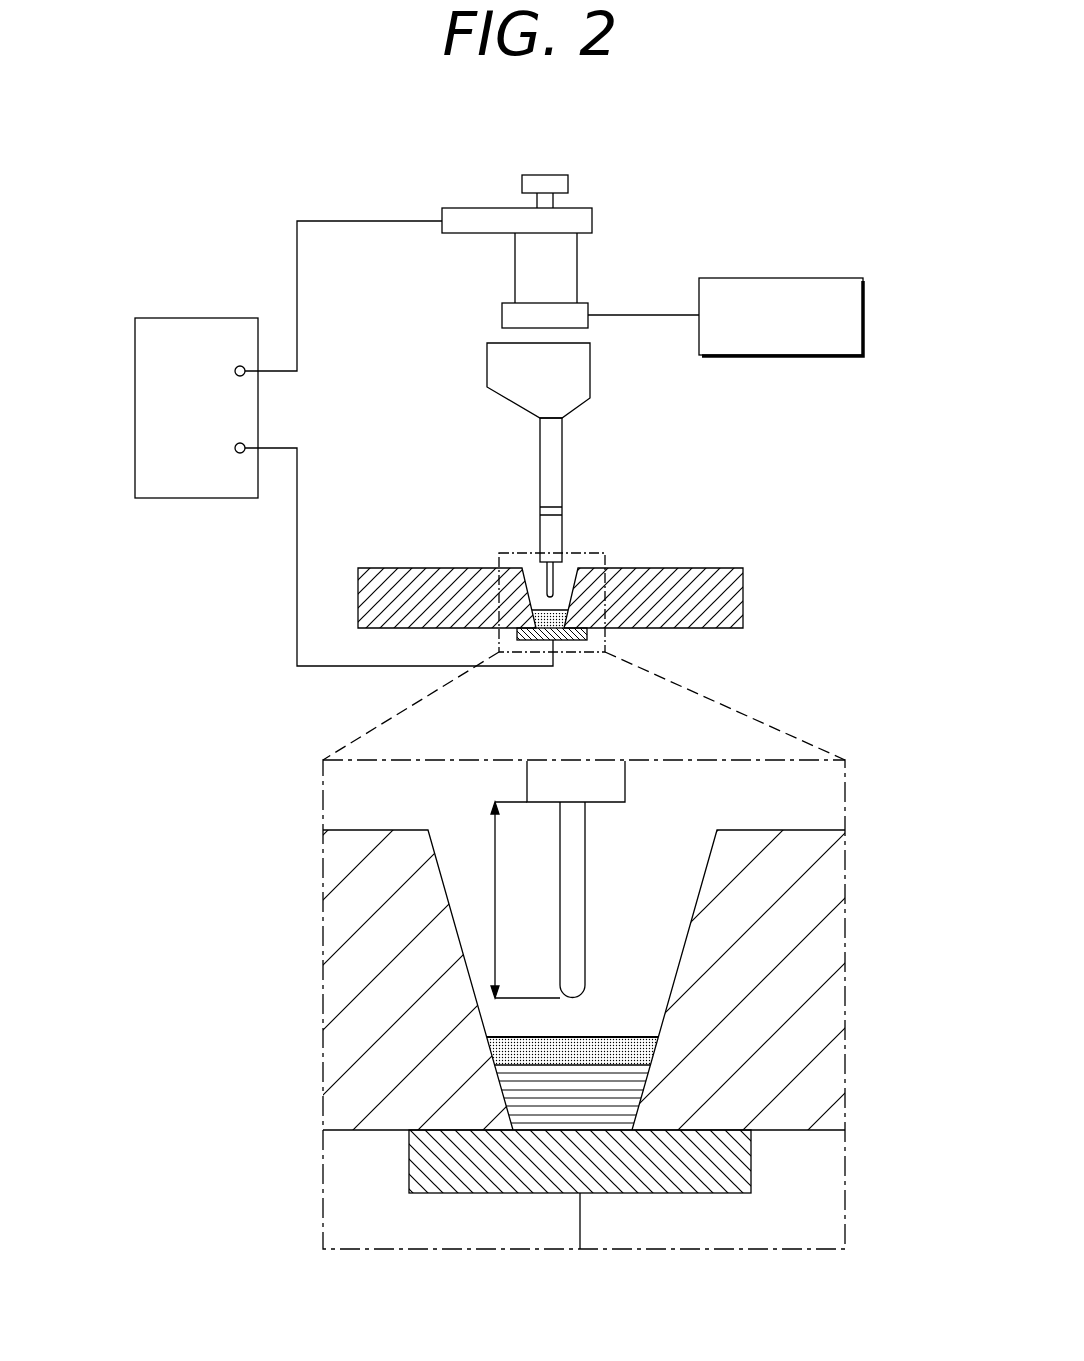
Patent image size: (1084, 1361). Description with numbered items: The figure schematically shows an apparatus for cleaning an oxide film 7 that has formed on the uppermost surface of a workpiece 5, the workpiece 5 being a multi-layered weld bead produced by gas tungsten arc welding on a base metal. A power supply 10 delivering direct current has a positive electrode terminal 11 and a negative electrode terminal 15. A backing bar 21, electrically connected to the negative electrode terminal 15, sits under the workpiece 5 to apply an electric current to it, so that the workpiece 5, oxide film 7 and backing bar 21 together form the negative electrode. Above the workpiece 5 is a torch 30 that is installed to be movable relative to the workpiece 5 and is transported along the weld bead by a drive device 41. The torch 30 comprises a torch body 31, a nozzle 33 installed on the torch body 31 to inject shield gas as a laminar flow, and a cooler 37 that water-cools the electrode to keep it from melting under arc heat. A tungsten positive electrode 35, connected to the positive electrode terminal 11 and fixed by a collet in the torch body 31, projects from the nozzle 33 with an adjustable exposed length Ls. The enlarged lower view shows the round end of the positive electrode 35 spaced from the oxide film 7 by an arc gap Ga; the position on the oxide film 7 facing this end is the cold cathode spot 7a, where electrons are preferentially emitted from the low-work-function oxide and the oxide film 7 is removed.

The workpiece 5 is at (547, 1107).
The oxide film 7 is at (568, 1053).
The cold cathode spot 7a is at (573, 1037).
The arc gap Ga is at (567, 1018).
The power supply 10 is at (198, 316).
The positive electrode terminal 11 is at (240, 366).
The negative electrode terminal 15 is at (241, 454).
The backing bar 21 is at (650, 1173).
The torch 30 is at (590, 158).
The torch body 31 is at (577, 269).
The nozzle 33 is at (562, 537).
The positive electrode 35 is at (555, 573).
The cooler 37 is at (512, 376).
The drive device 41 is at (781, 278).
The exposed length Ls is at (525, 900).